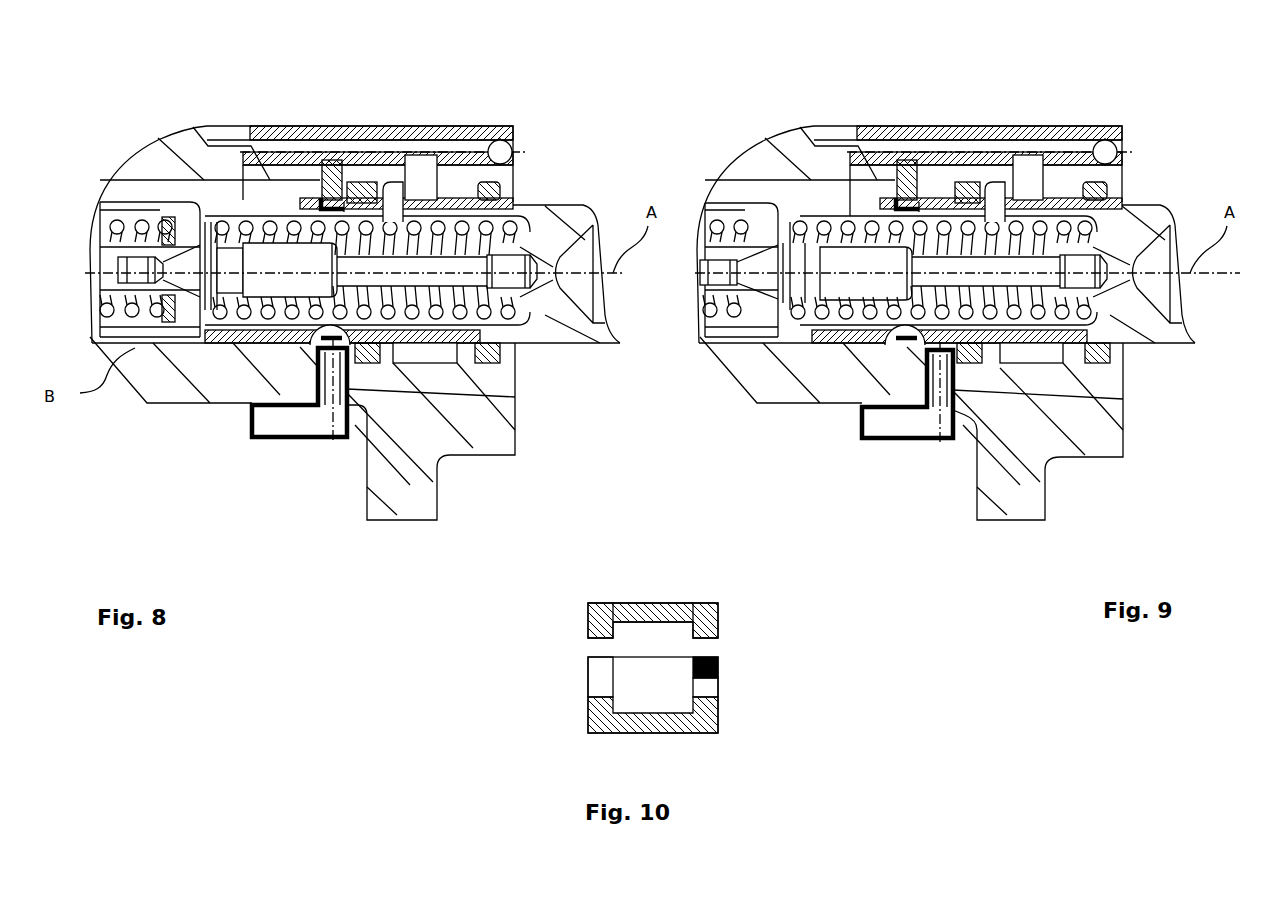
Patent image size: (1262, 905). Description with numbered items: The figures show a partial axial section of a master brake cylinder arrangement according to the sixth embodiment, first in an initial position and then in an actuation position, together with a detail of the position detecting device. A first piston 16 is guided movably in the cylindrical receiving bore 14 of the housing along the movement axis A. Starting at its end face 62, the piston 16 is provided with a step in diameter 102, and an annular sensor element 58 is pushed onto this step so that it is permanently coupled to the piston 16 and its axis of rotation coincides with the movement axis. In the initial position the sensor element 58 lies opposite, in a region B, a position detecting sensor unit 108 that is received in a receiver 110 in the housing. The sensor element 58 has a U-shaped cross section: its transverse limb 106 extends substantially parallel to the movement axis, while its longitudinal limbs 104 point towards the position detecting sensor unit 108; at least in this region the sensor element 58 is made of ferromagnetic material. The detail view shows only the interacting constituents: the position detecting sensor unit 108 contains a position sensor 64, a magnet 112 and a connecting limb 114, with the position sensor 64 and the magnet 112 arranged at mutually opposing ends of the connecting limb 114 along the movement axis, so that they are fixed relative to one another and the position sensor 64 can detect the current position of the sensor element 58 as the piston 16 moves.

In FIG. 8, the receiving bore 14 is at (192, 132).
In FIG. 8, the first piston 16 is at (542, 207).
In FIG. 9, the first piston 16 is at (1141, 207).
In FIG. 8, the sensor element 58 is at (342, 185).
In FIG. 9, the sensor element 58 is at (918, 200).
In FIG. 10, the sensor element 58 is at (733, 623).
In FIG. 8, the end face 62 is at (320, 198).
In FIG. 9, the end face 62 is at (895, 198).
In FIG. 10, the position sensor 64 is at (600, 679).
In FIG. 8, the step in diameter 102 is at (333, 200).
In FIG. 9, the step in diameter 102 is at (908, 200).
In FIG. 10, the longitudinal limbs 104 is at (588, 603).
In FIG. 10, the transverse limb 106 is at (645, 603).
In FIG. 8, the position detecting sensor unit 108 is at (312, 440).
In FIG. 9, the position detecting sensor unit 108 is at (918, 440).
In FIG. 10, the position detecting sensor unit 108 is at (733, 722).
In FIG. 8, the receiver 110 is at (515, 397).
In FIG. 9, the receiver 110 is at (1123, 399).
In FIG. 10, the magnet 112 is at (720, 673).
In FIG. 10, the connecting limb 114 is at (718, 690).